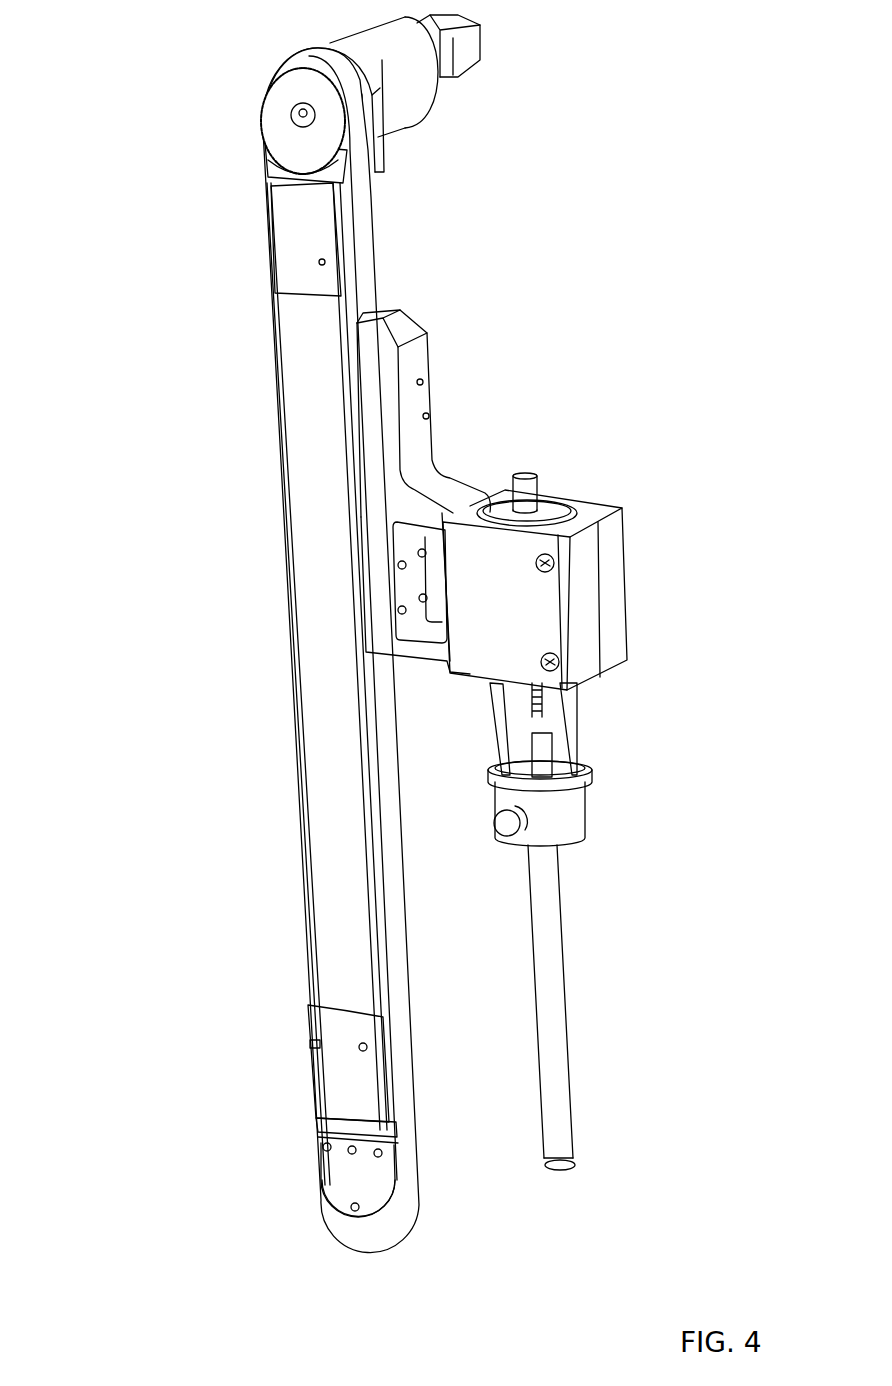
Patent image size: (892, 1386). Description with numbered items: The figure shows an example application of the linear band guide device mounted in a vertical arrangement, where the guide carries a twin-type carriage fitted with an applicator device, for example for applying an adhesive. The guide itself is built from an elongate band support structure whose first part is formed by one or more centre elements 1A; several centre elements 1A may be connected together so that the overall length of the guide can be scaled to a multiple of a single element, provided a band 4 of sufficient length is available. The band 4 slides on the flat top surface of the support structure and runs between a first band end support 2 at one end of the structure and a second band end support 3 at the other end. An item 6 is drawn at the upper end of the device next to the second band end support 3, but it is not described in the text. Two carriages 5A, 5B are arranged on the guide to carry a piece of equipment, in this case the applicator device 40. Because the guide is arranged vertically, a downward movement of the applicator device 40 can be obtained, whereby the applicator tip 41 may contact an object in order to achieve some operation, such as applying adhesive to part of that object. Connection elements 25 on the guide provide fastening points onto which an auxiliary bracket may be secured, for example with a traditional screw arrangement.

The centre element 1A is at (325, 660).
The first band end support 2 is at (335, 1180).
The second band end support 3 is at (273, 105).
The band 4 is at (368, 240).
The carriage 5A is at (355, 387).
The carriage 5B is at (360, 578).
The motor 6 is at (430, 110).
The connection element 25 is at (300, 222).
The applicator device 40 is at (630, 600).
The applicator tip 41 is at (575, 1143).